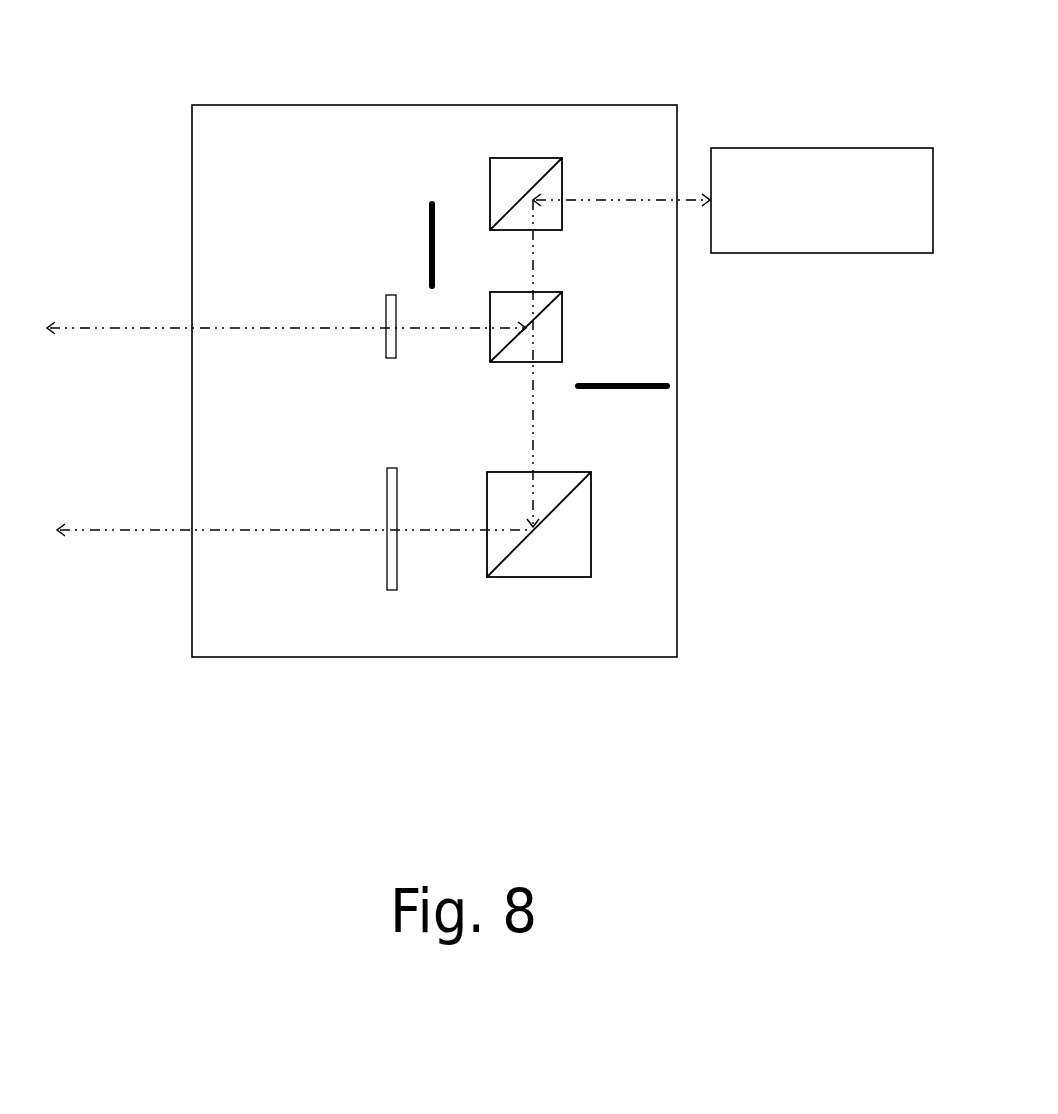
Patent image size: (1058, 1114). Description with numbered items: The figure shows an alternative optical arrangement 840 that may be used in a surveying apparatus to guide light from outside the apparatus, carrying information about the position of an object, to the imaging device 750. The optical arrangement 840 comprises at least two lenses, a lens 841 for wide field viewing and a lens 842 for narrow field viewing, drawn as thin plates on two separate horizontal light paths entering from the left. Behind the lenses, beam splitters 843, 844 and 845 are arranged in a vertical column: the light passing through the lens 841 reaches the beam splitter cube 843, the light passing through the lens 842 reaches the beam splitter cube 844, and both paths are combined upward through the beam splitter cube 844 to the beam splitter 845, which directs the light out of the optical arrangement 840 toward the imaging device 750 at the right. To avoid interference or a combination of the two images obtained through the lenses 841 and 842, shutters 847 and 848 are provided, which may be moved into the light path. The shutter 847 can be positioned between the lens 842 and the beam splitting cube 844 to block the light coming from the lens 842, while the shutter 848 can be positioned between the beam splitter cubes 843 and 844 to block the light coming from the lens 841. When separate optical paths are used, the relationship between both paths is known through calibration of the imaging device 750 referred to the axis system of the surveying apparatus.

The optical arrangement 840 is at (593, 103).
The lens 841 is at (390, 590).
The lens 842 is at (388, 292).
The beam splitter cube 843 is at (560, 578).
The beam splitter cube 844 is at (562, 340).
The beam splitter 845 is at (527, 158).
The shutter 847 is at (432, 203).
The shutter 848 is at (643, 390).
The imaging device 750 is at (822, 200).